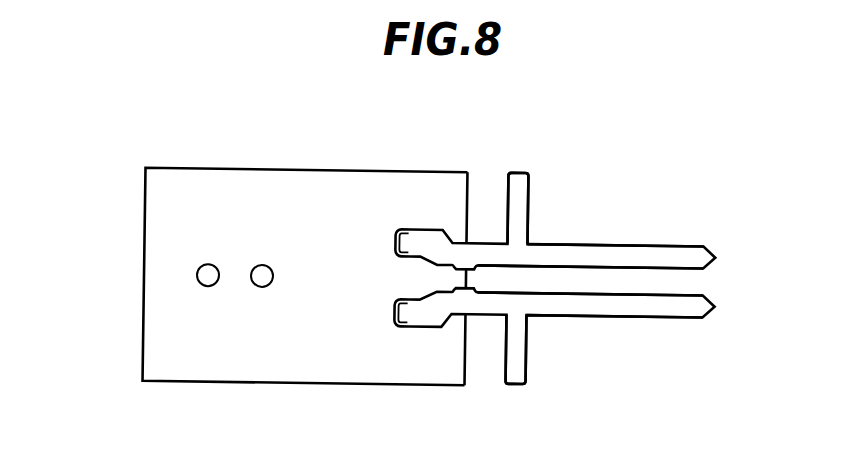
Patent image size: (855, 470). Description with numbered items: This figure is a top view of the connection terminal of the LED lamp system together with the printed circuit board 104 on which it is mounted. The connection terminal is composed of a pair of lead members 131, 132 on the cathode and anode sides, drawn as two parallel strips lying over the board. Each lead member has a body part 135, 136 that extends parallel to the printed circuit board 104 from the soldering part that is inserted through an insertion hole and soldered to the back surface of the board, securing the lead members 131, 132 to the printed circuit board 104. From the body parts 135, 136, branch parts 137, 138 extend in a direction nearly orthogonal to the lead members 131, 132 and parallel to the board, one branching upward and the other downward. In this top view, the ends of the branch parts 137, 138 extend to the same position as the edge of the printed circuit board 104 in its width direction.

The printed circuit board 104 is at (301, 178).
The lead member 131 is at (716, 256).
The lead member 132 is at (716, 307).
The body part 135 is at (603, 255).
The body part 136 is at (603, 305).
The branch part 137 is at (519, 183).
The branch part 138 is at (518, 372).